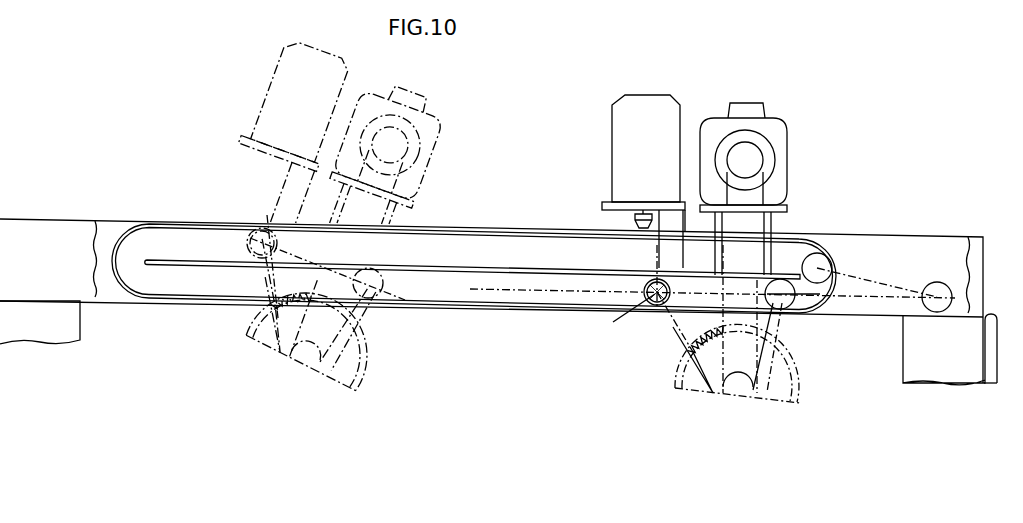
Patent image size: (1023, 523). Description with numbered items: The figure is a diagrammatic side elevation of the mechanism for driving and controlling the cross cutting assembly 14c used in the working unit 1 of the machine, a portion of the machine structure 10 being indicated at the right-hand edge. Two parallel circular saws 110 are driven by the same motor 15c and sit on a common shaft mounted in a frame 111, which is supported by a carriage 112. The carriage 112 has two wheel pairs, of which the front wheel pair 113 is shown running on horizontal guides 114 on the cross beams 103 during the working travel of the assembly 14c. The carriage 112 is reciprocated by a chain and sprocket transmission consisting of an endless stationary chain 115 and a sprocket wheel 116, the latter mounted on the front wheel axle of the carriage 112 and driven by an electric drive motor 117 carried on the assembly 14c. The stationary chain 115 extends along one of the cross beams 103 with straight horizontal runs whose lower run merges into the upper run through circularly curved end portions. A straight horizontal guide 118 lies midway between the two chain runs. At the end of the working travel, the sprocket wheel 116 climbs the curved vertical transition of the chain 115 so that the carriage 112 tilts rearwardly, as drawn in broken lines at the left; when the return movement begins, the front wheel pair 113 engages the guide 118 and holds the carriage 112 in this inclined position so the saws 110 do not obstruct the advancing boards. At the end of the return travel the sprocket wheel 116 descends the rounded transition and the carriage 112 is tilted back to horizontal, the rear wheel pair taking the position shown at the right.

The working unit 1 is at (993, 341).
The machine frame 10 is at (985, 364).
The cross beams 103 is at (980, 240).
The circular saws 110 is at (781, 366).
The frame 111 is at (795, 206).
The carriage 112 is at (680, 328).
The front wheel pair 113 is at (657, 279).
The horizontal guides 114 is at (482, 311).
The endless stationary chain 115 is at (470, 303).
The sprocket wheel 116 is at (645, 291).
The electric drive motor 117 is at (632, 118).
The straight horizontal guide 118 is at (458, 266).
The cross cutting assembly 14c is at (794, 162).
The motor 15c is at (581, 175).